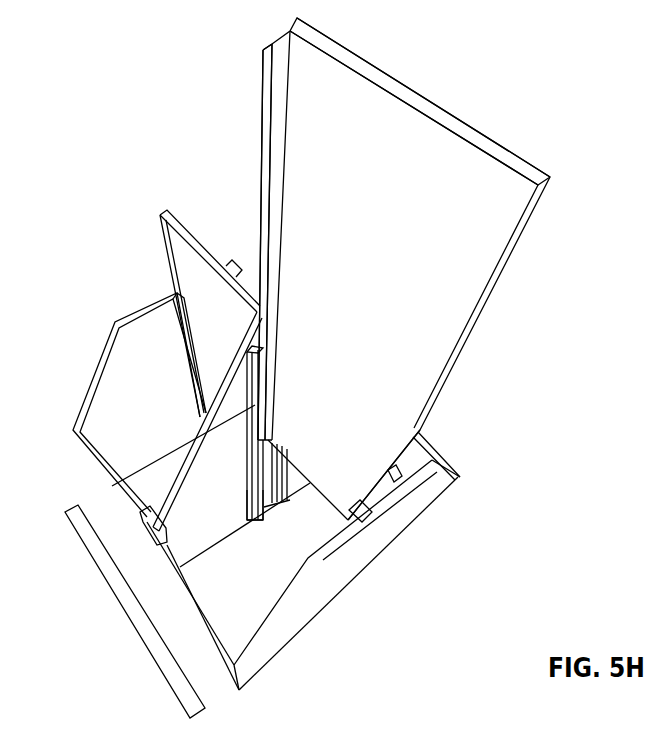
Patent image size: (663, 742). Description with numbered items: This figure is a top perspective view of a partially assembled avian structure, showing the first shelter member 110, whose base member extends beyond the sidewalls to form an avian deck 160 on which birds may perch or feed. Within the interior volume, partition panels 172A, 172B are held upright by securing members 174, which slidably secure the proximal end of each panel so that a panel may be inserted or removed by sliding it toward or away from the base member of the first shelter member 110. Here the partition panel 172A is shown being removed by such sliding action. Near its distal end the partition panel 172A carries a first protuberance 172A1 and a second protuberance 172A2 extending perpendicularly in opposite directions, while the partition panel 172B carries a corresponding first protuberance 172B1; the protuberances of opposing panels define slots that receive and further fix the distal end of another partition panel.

The first shelter member 110 is at (93, 376).
The avian deck 160 is at (72, 528).
The partition panel 172A is at (503, 158).
The first protuberance 172A1 is at (317, 27).
The second protuberance 172A2 is at (278, 42).
The partition panel 172B is at (177, 480).
The first protuberance 172B1 is at (275, 507).
The securing member 174 is at (160, 535).